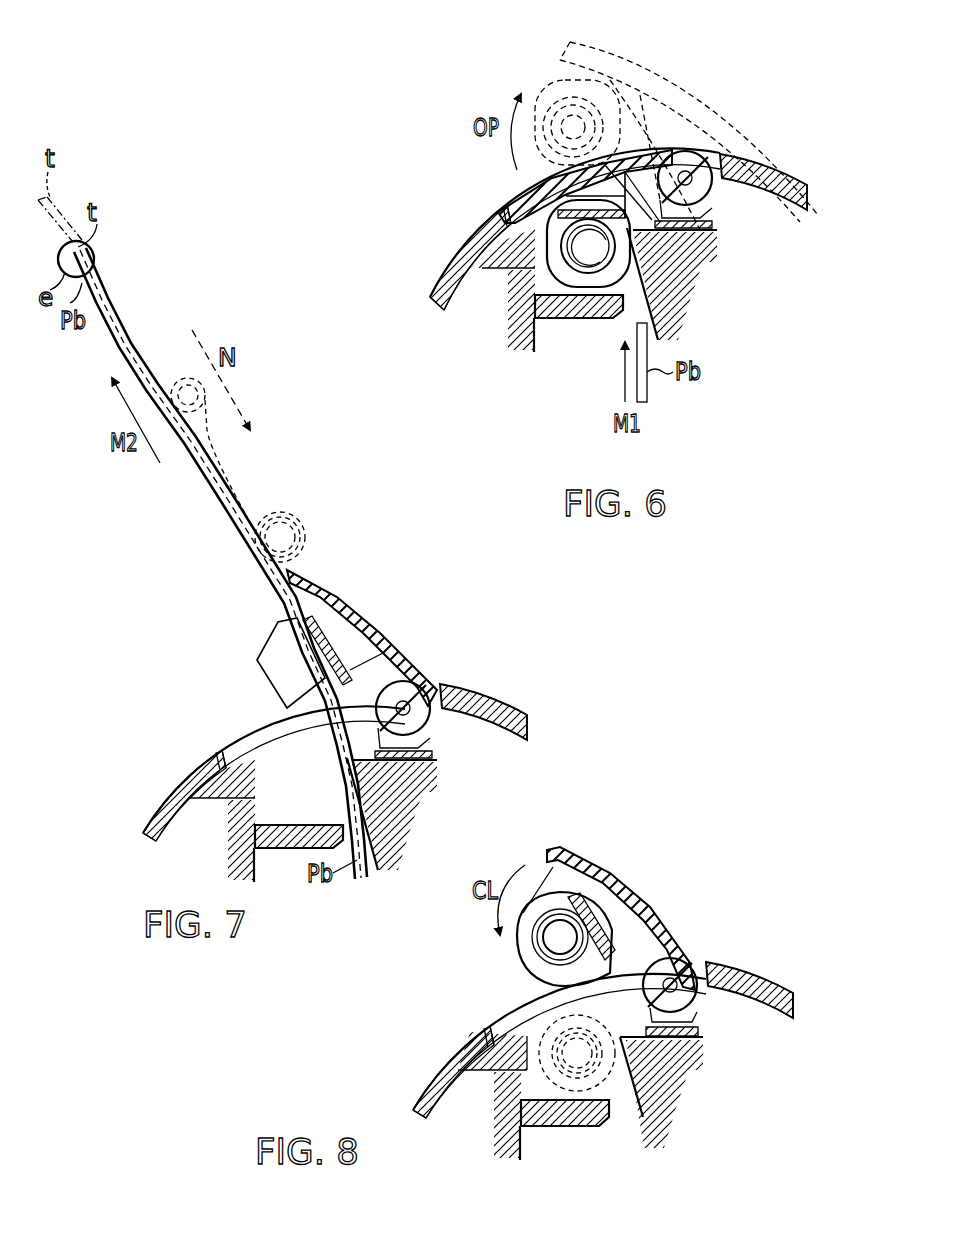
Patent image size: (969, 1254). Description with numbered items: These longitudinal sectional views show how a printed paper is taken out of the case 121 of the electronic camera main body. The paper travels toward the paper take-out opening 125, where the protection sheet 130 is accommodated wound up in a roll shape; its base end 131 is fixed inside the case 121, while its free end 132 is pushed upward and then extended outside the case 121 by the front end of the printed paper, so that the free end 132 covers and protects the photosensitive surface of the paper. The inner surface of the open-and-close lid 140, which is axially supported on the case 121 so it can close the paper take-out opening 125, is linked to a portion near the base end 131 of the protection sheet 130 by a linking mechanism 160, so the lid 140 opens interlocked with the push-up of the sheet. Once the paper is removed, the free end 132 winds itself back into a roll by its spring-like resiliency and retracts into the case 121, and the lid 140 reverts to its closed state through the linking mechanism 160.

In FIG. 6, the case 121 is at (752, 155).
In FIG. 7, the case 121 is at (197, 757).
In FIG. 8, the case 121 is at (455, 1042).
In FIG. 6, the paper take-out opening 125 is at (533, 229).
In FIG. 7, the paper take-out opening 125 is at (221, 760).
In FIG. 8, the paper take-out opening 125 is at (489, 1036).
In FIG. 6, the protection sheet 130 is at (719, 253).
In FIG. 7, the protection sheet 130 is at (309, 710).
In FIG. 8, the protection sheet 130 is at (591, 1034).
In FIG. 6, the base end 131 is at (653, 232).
In FIG. 7, the base end 131 is at (395, 780).
In FIG. 8, the base end 131 is at (661, 1057).
In FIG. 6, the free end 132 is at (623, 263).
In FIG. 7, the free end 132 is at (95, 268).
In FIG. 8, the free end 132 is at (520, 953).
In FIG. 6, the open-and-close lid 140 is at (520, 197).
In FIG. 7, the open-and-close lid 140 is at (375, 622).
In FIG. 8, the open-and-close lid 140 is at (588, 855).
In FIG. 6, the linking mechanism 160 is at (648, 170).
In FIG. 7, the linking mechanism 160 is at (328, 640).
In FIG. 8, the linking mechanism 160 is at (620, 925).